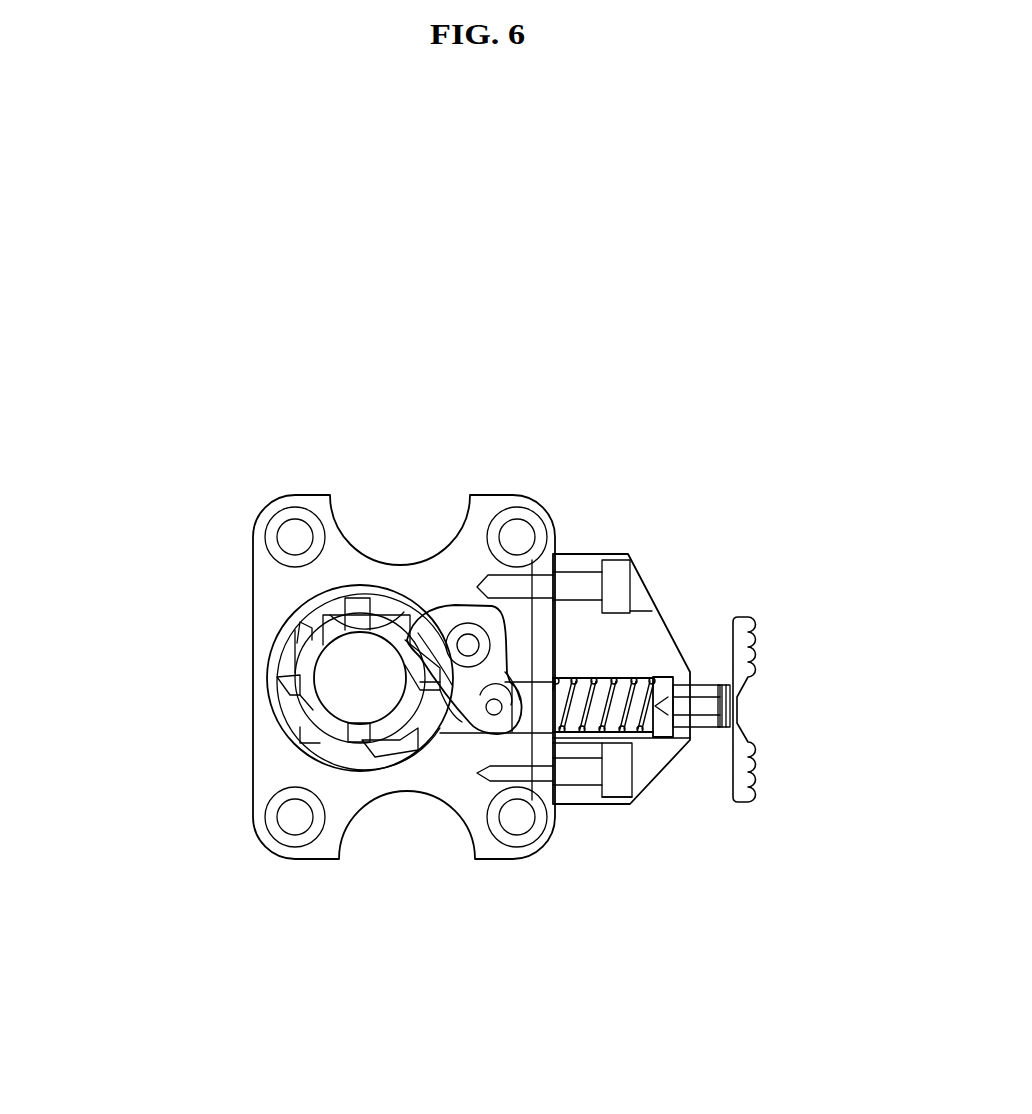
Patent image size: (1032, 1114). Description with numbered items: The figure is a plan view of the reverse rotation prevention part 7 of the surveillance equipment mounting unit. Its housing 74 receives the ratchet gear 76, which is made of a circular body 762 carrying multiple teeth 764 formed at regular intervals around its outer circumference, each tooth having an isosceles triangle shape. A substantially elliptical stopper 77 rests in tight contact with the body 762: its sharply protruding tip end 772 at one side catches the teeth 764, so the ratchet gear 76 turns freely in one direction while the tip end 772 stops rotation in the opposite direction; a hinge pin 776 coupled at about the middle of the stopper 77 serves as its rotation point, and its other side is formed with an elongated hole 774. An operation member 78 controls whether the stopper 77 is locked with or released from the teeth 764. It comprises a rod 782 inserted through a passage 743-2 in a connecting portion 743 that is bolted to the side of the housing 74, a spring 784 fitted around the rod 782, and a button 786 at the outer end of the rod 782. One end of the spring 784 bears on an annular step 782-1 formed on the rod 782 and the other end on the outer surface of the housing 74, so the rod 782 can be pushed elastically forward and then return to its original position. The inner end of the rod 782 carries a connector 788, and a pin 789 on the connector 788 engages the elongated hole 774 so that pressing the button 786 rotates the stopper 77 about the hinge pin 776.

The reverse rotation prevention part 7 is at (570, 383).
The housing 74 is at (447, 787).
The connecting portion 743 is at (657, 638).
The passage 743-2 is at (628, 682).
The ratchet gear 76 is at (343, 685).
The body 762 is at (315, 710).
The teeth 764 is at (317, 743).
The stopper 77 is at (447, 612).
The tip end 772 is at (343, 615).
The elongated hole 774 is at (517, 688).
The hinge pin 776 is at (470, 640).
The connector 788 is at (457, 727).
The pin 789 is at (500, 720).
The operation member 78 is at (762, 818).
The rod 782 is at (600, 794).
The annular step 782-1 is at (683, 662).
The spring 784 is at (597, 680).
The button 786 is at (755, 662).